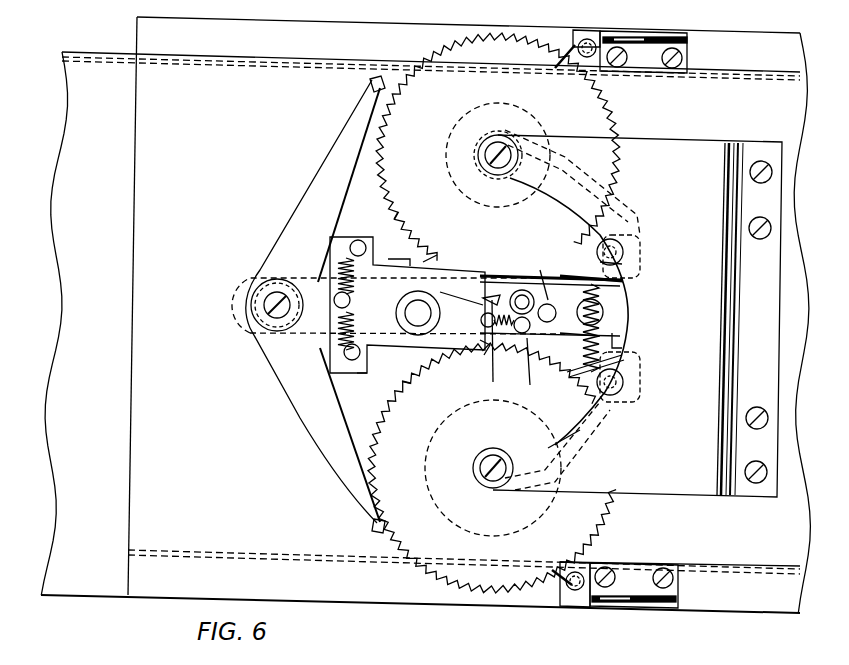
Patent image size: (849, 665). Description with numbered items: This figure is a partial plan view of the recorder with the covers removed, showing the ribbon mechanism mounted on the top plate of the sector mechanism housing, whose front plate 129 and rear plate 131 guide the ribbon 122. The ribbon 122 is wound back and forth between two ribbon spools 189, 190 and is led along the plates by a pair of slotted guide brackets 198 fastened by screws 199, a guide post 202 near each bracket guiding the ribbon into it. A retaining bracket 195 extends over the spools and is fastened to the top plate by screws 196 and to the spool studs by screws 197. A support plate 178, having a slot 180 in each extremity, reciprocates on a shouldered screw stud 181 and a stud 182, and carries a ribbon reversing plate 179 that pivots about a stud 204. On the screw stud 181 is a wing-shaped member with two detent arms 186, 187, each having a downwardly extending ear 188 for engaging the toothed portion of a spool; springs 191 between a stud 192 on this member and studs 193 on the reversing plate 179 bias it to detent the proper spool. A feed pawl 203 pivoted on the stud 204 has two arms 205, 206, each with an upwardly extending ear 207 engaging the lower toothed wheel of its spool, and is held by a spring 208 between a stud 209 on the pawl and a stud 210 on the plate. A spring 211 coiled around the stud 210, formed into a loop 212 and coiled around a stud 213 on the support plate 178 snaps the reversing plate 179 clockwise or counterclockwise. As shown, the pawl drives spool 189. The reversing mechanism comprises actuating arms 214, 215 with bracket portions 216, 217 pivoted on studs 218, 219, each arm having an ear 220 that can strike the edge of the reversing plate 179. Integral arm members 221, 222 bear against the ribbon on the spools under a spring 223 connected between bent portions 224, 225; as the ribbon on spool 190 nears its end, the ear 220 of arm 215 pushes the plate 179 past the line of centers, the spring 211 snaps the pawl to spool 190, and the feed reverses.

The ribbon 122 is at (513, 107).
The front plate 129 is at (157, 62).
The rear plate 131 is at (184, 550).
The support plate 178 is at (613, 340).
The ribbon reversing plate 179 is at (355, 373).
The slot 180 is at (262, 273).
The shouldered screw stud 181 is at (273, 316).
The stud 182 is at (605, 255).
The detent arm 186 is at (335, 450).
The detent arm 187 is at (338, 143).
The ear 188 is at (377, 83).
The ribbon spool 189 is at (427, 567).
The ribbon spool 190 is at (603, 127).
The springs 191 is at (340, 272).
The stud 192 is at (352, 300).
The studs 193 is at (352, 247).
The retaining bracket 195 is at (700, 490).
The screws 196 is at (762, 162).
The screws 197 is at (488, 153).
The slotted guide brackets 198 is at (630, 37).
The screws 199 is at (617, 63).
The guide post 202 is at (580, 42).
The feed pawl 203 is at (448, 323).
The stud 204 is at (400, 318).
The arm 205 is at (490, 345).
The arm 206 is at (493, 308).
The ear 207 is at (500, 298).
The spring 208 is at (522, 290).
The stud 209 is at (492, 348).
The stud 210 is at (520, 350).
The spring 211 is at (555, 290).
The loop 212 is at (540, 270).
The stud 213 is at (582, 320).
The actuating arm 214 is at (545, 450).
The actuating arm 215 is at (423, 262).
The bracket portion 216 is at (617, 380).
The bracket portion 217 is at (623, 238).
The stud 218 is at (615, 392).
The stud 219 is at (617, 265).
The ear 220 is at (397, 238).
The arm member 221 is at (528, 508).
The arm member 222 is at (566, 150).
The spring 223 is at (627, 297).
The bent portion 224 is at (610, 365).
The bent portion 225 is at (623, 280).